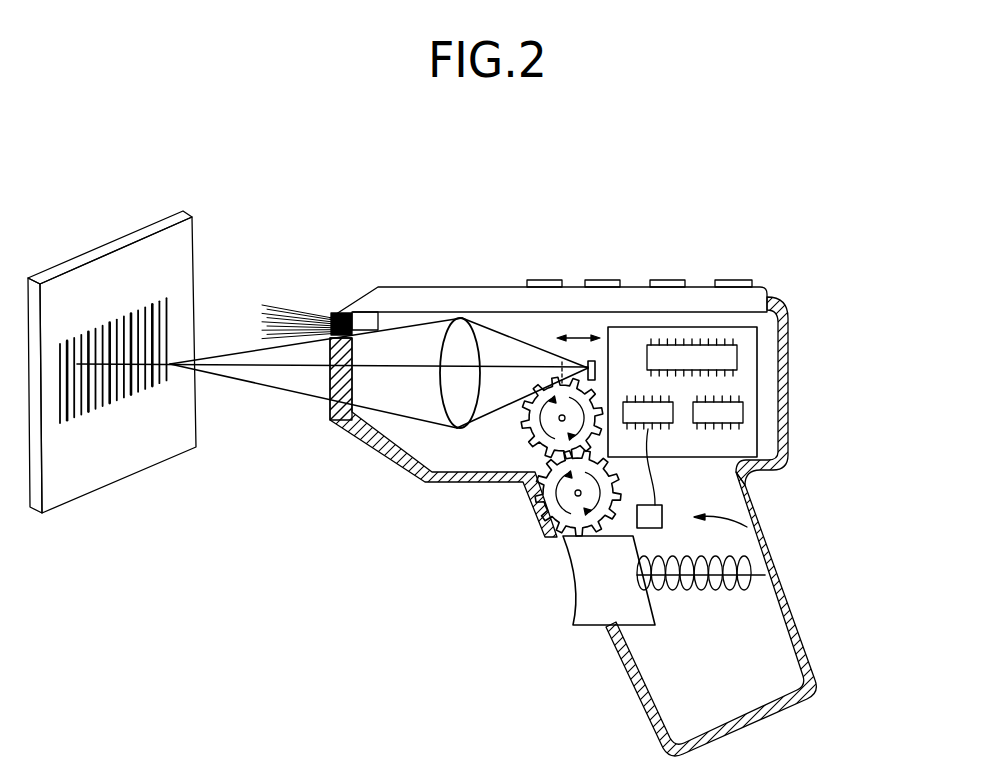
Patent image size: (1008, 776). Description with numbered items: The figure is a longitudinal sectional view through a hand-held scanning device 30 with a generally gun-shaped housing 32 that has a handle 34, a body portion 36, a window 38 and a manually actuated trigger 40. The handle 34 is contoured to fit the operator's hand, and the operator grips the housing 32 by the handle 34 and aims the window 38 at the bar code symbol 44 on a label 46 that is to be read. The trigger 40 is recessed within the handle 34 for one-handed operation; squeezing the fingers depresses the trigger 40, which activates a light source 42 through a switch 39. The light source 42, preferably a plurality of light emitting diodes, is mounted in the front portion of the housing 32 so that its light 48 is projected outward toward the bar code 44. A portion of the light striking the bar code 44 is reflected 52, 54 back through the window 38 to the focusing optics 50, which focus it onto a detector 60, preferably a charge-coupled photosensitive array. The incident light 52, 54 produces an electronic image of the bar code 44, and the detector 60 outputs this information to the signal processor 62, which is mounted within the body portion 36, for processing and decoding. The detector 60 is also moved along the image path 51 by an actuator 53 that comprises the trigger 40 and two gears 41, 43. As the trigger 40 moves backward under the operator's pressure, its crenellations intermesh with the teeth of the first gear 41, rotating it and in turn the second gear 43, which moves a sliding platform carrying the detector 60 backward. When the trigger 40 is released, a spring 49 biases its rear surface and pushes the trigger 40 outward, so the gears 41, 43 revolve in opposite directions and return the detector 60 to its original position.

The hand-held scanning device 30 is at (638, 227).
The housing 32 is at (613, 511).
The handle 34 is at (615, 663).
The body portion 36 is at (783, 307).
The window 38 is at (328, 388).
The switch 39 is at (662, 505).
The trigger 40 is at (570, 617).
The first gear 41 is at (578, 493).
The light source 42 is at (365, 318).
The second gear 43 is at (562, 418).
The bar code symbol 44 is at (118, 313).
The label 46 is at (183, 212).
The light 48 is at (308, 313).
The spring 49 is at (715, 592).
The focusing optics 50 is at (462, 317).
The image path 51 is at (497, 372).
The reflected light 52 is at (217, 380).
The actuator 53 is at (745, 527).
The reflected light 54 is at (407, 330).
The detector 60 is at (560, 362).
The signal processor 62 is at (693, 350).